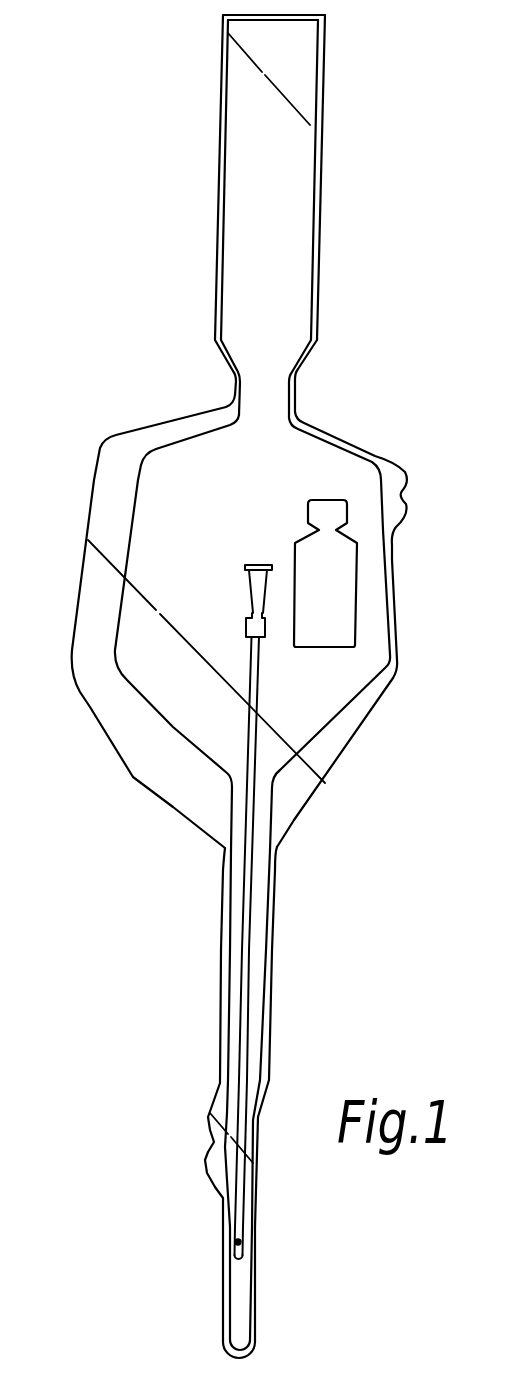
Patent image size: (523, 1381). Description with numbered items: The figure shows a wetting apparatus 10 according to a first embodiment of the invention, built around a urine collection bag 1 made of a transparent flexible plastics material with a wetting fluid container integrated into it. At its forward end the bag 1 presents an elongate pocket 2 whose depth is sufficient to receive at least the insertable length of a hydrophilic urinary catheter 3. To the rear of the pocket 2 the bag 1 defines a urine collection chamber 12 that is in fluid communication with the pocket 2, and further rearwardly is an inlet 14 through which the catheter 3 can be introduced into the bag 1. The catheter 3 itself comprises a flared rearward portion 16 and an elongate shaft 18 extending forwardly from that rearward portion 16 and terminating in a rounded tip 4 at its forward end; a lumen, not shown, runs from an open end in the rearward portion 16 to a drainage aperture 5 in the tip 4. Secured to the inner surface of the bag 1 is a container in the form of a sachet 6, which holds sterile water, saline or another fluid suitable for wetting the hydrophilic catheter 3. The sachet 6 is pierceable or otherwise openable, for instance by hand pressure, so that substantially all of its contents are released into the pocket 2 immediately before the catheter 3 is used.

The urine collection bag 1 is at (312, 708).
The elongate pocket 2 is at (233, 1328).
The hydrophilic urinary catheter 3 is at (247, 963).
The rounded tip 4 is at (243, 1257).
The drainage aperture 5 is at (238, 1243).
The sachet 6 is at (340, 578).
The wetting apparatus 10 is at (86, 776).
The urine collection chamber 12 is at (155, 500).
The inlet 14 is at (295, 212).
The flared rearward portion 16 is at (248, 592).
The elongate shaft 18 is at (258, 748).